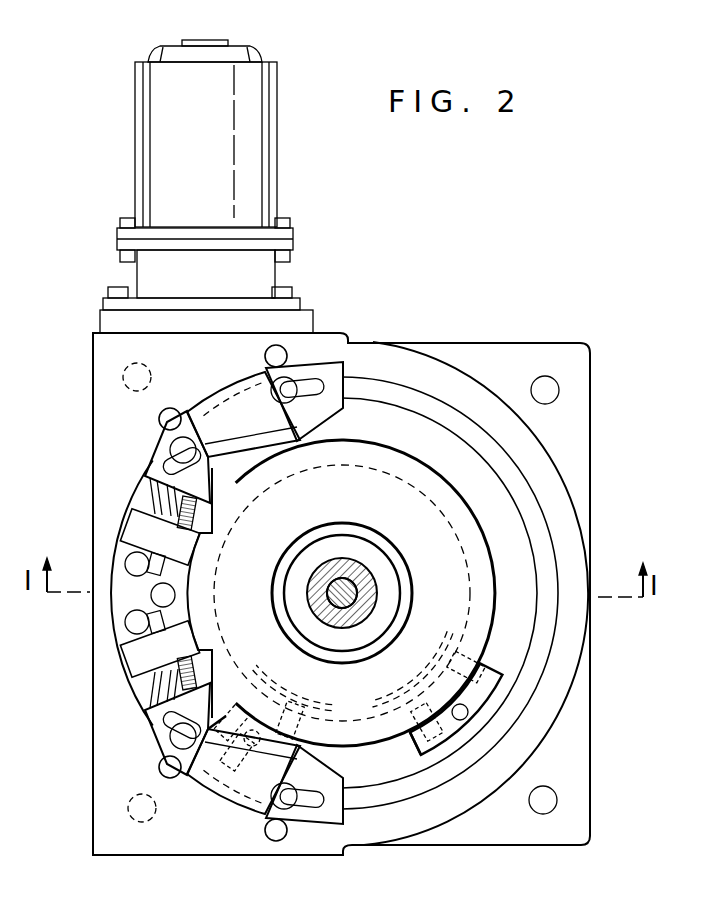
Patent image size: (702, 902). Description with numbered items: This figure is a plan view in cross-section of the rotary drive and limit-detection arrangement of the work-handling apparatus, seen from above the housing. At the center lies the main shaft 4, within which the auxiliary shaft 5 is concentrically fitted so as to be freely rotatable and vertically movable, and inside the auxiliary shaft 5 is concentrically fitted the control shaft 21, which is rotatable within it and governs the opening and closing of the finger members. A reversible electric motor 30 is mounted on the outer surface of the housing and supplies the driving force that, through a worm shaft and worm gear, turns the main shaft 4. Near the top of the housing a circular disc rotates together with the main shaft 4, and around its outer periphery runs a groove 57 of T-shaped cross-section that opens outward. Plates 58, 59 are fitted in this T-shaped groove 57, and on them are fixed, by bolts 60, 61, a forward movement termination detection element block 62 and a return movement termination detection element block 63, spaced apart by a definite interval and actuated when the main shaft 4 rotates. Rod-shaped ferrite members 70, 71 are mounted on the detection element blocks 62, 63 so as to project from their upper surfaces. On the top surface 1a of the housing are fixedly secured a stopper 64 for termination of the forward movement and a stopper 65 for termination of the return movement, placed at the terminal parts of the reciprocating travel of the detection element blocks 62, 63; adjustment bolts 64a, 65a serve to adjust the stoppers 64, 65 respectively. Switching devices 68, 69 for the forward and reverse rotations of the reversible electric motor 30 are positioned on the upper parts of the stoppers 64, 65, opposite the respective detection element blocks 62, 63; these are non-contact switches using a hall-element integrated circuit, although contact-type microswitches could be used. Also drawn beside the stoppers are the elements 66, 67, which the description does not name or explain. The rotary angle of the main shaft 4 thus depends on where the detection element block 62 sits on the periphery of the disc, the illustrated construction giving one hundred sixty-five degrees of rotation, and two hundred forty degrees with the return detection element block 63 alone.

The top surface of the housing 1a is at (118, 757).
The reversible electric motor 30 is at (250, 142).
The main shaft 4 is at (384, 578).
The auxiliary shaft 5 is at (347, 614).
The control shaft 21 is at (318, 596).
The T-shaped groove 57 is at (468, 632).
The plate 58 is at (441, 673).
The plate 59 is at (268, 706).
The bolt 60 is at (474, 700).
The bolt 61 is at (203, 770).
The forward movement termination detection element block 62 is at (421, 755).
The return movement termination detection element block 63 is at (338, 771).
The forward movement termination stopper 64 is at (200, 488).
The adjustment bolt 64a is at (148, 568).
The return movement termination stopper 65 is at (203, 693).
The adjustment bolt 65a is at (156, 624).
The upper clamp block 66 is at (286, 382).
The lower clamp block 67 is at (284, 800).
The switching device 68 is at (298, 433).
The switching device 69 is at (222, 700).
The rod-shaped ferrite member 70 is at (436, 686).
The rod-shaped ferrite member 71 is at (227, 792).